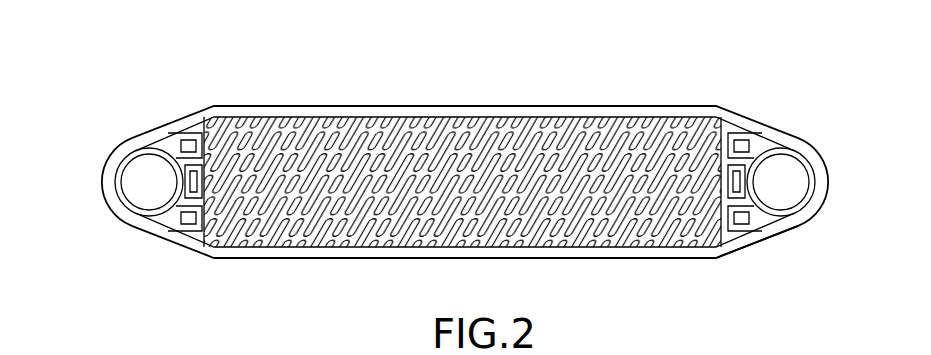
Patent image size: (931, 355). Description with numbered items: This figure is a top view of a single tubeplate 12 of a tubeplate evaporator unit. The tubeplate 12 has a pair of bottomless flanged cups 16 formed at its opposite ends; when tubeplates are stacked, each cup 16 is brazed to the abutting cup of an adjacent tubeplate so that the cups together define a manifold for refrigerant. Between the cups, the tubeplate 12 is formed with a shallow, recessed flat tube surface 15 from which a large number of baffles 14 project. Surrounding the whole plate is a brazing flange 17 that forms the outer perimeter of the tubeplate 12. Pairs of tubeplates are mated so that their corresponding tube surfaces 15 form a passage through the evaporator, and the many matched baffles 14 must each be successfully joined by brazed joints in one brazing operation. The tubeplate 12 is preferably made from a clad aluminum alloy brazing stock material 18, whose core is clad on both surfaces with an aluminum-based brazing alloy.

The tubeplate 12 is at (722, 88).
The baffles 14 is at (405, 120).
The recessed flat tube surface 15 is at (432, 120).
The bottomless flanged cups 16 is at (785, 178).
The brazing flange 17 is at (486, 113).
The clad aluminum alloy brazing stock material 18 is at (770, 240).